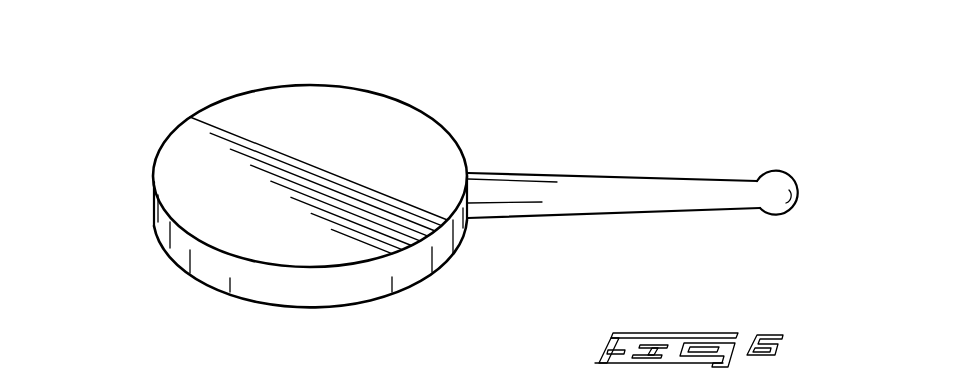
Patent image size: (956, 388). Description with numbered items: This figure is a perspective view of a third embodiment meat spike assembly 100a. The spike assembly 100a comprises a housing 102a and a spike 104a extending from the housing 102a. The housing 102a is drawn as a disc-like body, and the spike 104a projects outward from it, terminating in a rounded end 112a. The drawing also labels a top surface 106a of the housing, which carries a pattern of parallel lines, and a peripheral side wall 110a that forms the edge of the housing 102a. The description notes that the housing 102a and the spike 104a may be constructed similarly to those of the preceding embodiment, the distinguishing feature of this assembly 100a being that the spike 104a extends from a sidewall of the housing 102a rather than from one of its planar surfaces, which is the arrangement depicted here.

The spike assembly 100a is at (168, 292).
The housing 102a is at (408, 82).
The spike 104a is at (680, 161).
The top surface with ribbed pattern 106a is at (286, 250).
The peripheral side wall 110a is at (412, 272).
The ball end of handle 112a is at (857, 126).